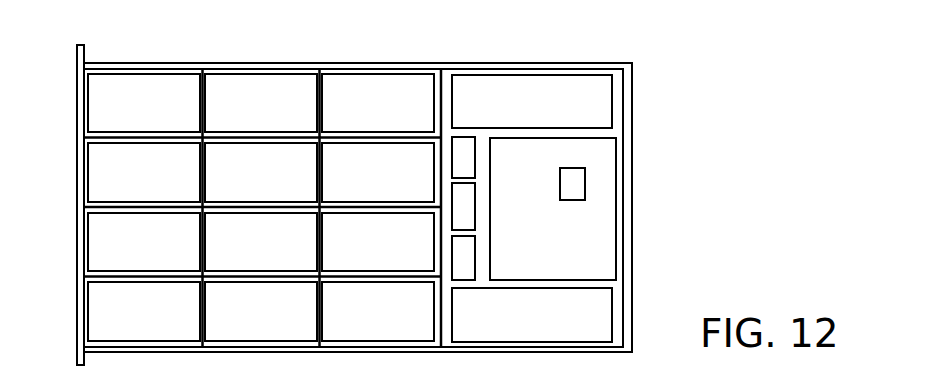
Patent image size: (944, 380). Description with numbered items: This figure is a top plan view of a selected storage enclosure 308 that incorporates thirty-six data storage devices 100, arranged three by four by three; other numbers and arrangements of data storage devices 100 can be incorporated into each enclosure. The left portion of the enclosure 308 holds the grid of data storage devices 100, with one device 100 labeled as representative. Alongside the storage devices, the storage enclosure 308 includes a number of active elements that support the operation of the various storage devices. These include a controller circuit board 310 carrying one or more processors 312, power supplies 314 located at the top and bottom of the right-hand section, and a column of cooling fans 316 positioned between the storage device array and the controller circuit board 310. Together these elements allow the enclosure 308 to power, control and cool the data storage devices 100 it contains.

The data storage device 100 is at (261, 85).
The storage enclosure 308 is at (758, 91).
The controller circuit board 310 is at (588, 236).
The processor 312 is at (585, 187).
The power supply 314 is at (548, 85).
The cooling fan 316 is at (460, 148).